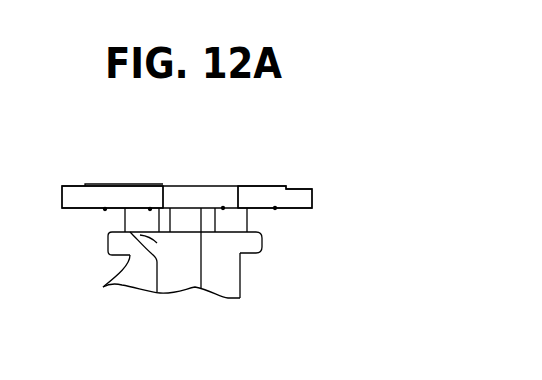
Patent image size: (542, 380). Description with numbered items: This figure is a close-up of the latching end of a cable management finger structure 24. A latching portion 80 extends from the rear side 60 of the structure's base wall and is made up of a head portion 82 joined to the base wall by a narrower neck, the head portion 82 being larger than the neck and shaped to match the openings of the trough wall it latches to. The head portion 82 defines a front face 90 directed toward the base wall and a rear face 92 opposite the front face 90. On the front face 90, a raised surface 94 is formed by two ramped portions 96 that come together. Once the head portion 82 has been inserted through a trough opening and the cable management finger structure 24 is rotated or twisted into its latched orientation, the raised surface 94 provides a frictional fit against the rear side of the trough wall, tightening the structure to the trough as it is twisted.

The cable management finger structure 24 is at (275, 276).
The rear side 60 is at (103, 244).
The latching portion 80 is at (75, 193).
The head portion 82 is at (107, 193).
The front face 90 is at (70, 208).
The rear face 92 is at (275, 185).
The raised surface 94 is at (143, 209).
The ramped portion 96 is at (275, 208).